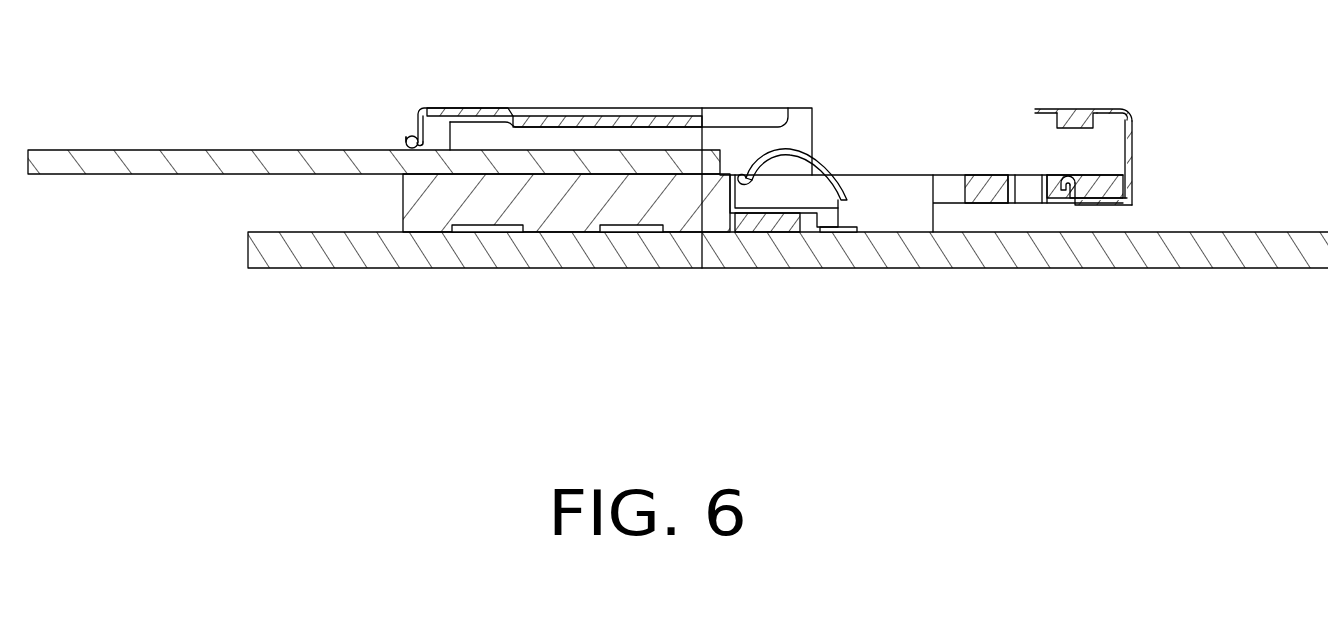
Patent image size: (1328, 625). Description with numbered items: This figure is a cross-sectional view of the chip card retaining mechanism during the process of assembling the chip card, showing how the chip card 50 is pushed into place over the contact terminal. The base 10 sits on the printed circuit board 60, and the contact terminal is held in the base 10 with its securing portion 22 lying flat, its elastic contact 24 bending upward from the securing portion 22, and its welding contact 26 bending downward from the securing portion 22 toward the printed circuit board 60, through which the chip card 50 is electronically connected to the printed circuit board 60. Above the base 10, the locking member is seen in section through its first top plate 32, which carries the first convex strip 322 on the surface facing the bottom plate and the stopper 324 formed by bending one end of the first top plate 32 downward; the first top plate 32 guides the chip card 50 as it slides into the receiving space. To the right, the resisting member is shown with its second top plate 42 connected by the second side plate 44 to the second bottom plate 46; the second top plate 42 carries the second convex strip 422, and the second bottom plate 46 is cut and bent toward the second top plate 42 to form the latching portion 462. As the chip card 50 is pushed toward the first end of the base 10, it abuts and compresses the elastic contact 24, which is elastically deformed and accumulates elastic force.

The base 10 is at (445, 205).
The securing portion 22 is at (767, 215).
The elastic contact 24 is at (823, 162).
The welding contact 26 is at (630, 232).
The first top plate 32 is at (470, 112).
The first convex strip 322 is at (633, 120).
The stopper 324 is at (410, 140).
The second top plate 42 is at (1102, 109).
The second convex strip 422 is at (1067, 125).
The second side plate 44 is at (1133, 147).
The second bottom plate 46 is at (1113, 210).
The latching portion 462 is at (1073, 173).
The chip card 50 is at (172, 160).
The printed circuit board 60 is at (323, 247).